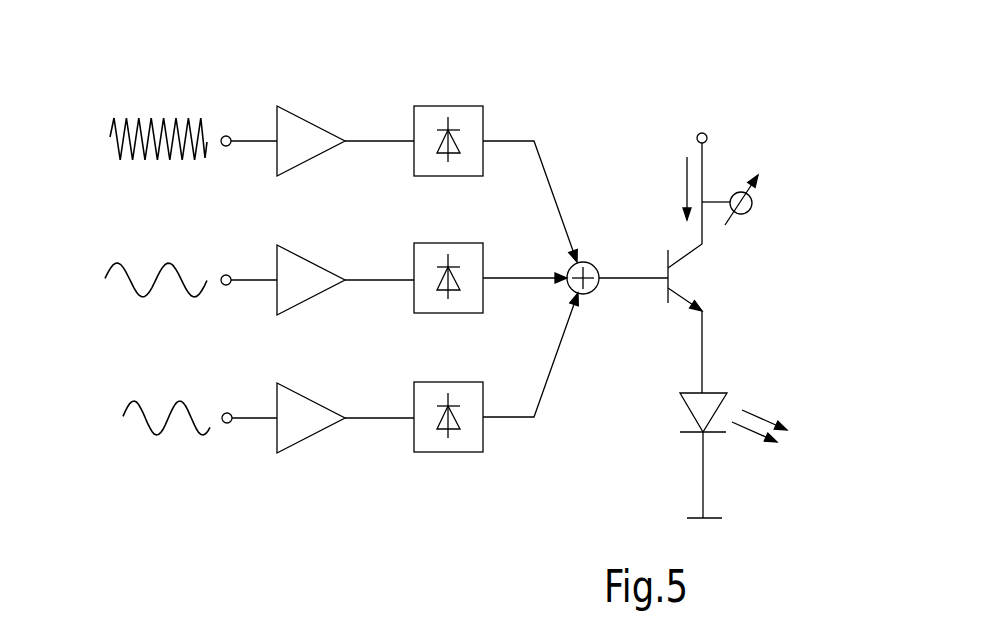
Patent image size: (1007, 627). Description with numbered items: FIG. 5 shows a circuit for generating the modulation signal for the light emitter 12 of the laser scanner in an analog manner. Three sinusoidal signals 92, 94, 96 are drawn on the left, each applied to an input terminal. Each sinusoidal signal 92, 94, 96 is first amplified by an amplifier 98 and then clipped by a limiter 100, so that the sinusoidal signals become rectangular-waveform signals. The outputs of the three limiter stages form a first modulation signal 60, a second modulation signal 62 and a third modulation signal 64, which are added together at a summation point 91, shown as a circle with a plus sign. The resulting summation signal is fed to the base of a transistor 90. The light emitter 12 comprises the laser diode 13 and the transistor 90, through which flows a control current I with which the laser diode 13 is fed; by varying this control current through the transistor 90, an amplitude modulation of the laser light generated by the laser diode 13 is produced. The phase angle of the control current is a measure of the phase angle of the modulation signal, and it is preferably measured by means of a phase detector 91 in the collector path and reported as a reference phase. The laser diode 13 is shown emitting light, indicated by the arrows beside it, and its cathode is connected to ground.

The light emitter 12 is at (779, 169).
The laser diode 13 is at (718, 389).
The first modulation signal 60 is at (543, 160).
The second modulation signal 62 is at (507, 280).
The third modulation signal 64 is at (550, 372).
The transistor 90 is at (692, 258).
The summation point 91 is at (598, 262).
The first sinusoidal signal 92 is at (173, 118).
The second sinusoidal signal 94 is at (160, 263).
The third sinusoidal signal 96 is at (168, 407).
The amplifier 98 is at (307, 112).
The limiter 100 is at (452, 106).